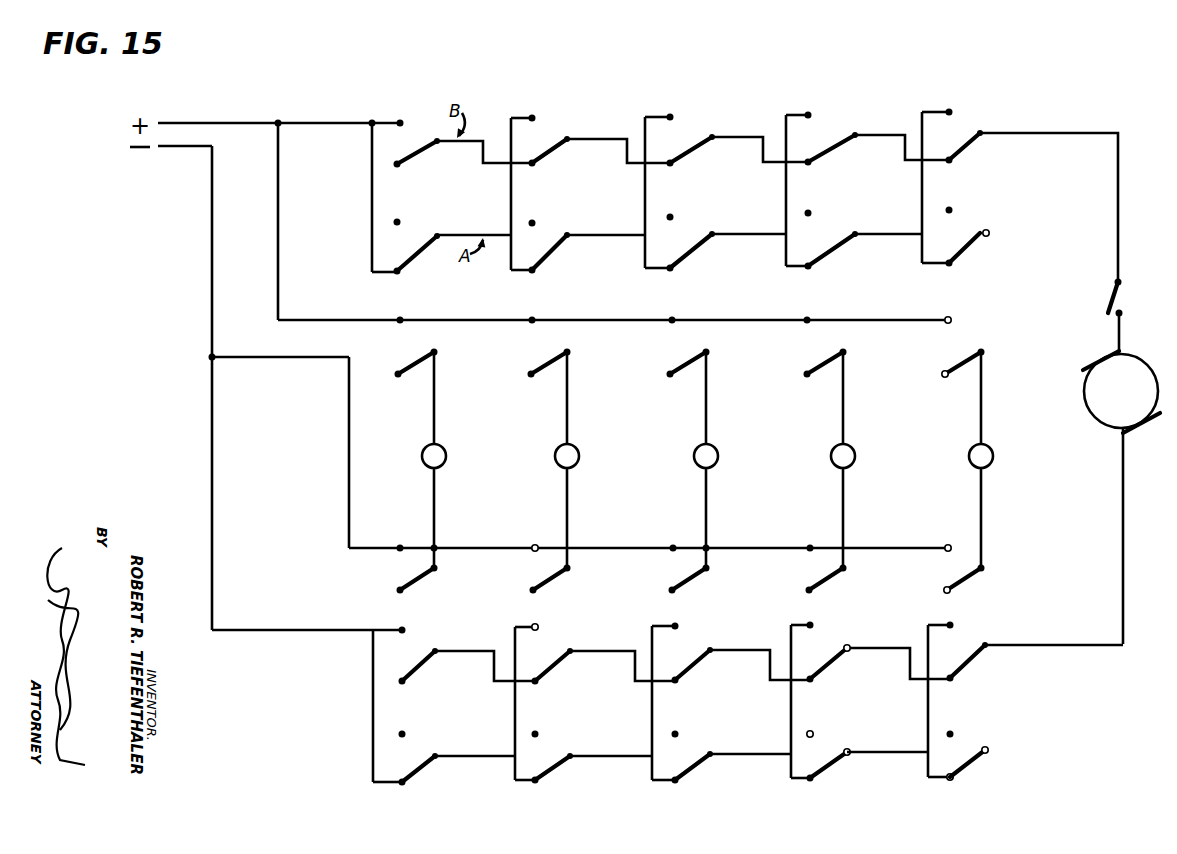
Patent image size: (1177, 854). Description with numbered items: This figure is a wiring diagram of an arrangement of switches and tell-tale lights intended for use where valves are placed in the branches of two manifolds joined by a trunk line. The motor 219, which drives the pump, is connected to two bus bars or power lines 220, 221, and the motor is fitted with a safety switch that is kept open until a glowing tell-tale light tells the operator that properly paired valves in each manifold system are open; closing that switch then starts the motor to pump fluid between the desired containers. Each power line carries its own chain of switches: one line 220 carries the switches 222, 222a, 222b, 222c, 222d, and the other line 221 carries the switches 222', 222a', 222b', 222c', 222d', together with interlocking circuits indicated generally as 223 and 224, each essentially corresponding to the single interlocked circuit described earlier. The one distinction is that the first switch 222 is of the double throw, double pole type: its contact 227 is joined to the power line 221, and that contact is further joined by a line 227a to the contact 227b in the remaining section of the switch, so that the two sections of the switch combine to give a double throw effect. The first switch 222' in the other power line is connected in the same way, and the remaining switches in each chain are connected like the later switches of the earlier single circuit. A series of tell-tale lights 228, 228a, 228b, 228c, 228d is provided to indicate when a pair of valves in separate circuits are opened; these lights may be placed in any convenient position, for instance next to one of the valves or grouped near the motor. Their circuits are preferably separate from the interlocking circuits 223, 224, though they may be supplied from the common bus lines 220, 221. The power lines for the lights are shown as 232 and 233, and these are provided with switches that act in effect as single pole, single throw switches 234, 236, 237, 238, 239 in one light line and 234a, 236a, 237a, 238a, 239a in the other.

The bus bar 220 is at (248, 122).
The power line 221 is at (178, 150).
The first switch 222 is at (425, 162).
The switch 222a is at (569, 161).
The switch 222b is at (703, 160).
The switch 222c is at (841, 158).
The switch 222d is at (986, 153).
The interlocking circuit 223 is at (756, 184).
The interlocking circuit 224 is at (748, 649).
The contact 227 is at (401, 121).
The line 227a is at (372, 216).
The contact 227b is at (400, 276).
The tell-tale light 228 is at (447, 464).
The tell-tale light 228a is at (578, 460).
The tell-tale light 228b is at (718, 464).
The tell-tale light 228c is at (855, 462).
The tell-tale light 228d is at (992, 464).
The power line for the lights 232 is at (278, 306).
The power line for the lights 233 is at (250, 357).
The switch 234 is at (424, 352).
The switch 236 is at (557, 352).
The switch 237 is at (696, 352).
The switch 238 is at (833, 352).
The switch 239 is at (971, 352).
The switch 234a is at (416, 580).
The switch 236a is at (549, 580).
The switch 237a is at (688, 580).
The switch 238a is at (825, 580).
The switch 239a is at (963, 580).
The motor 219 is at (1087, 415).
The first switch 222' is at (432, 672).
The switch 222a' is at (570, 672).
The switch 222b' is at (707, 671).
The switch 222c' is at (843, 670).
The switch 222d' is at (985, 666).